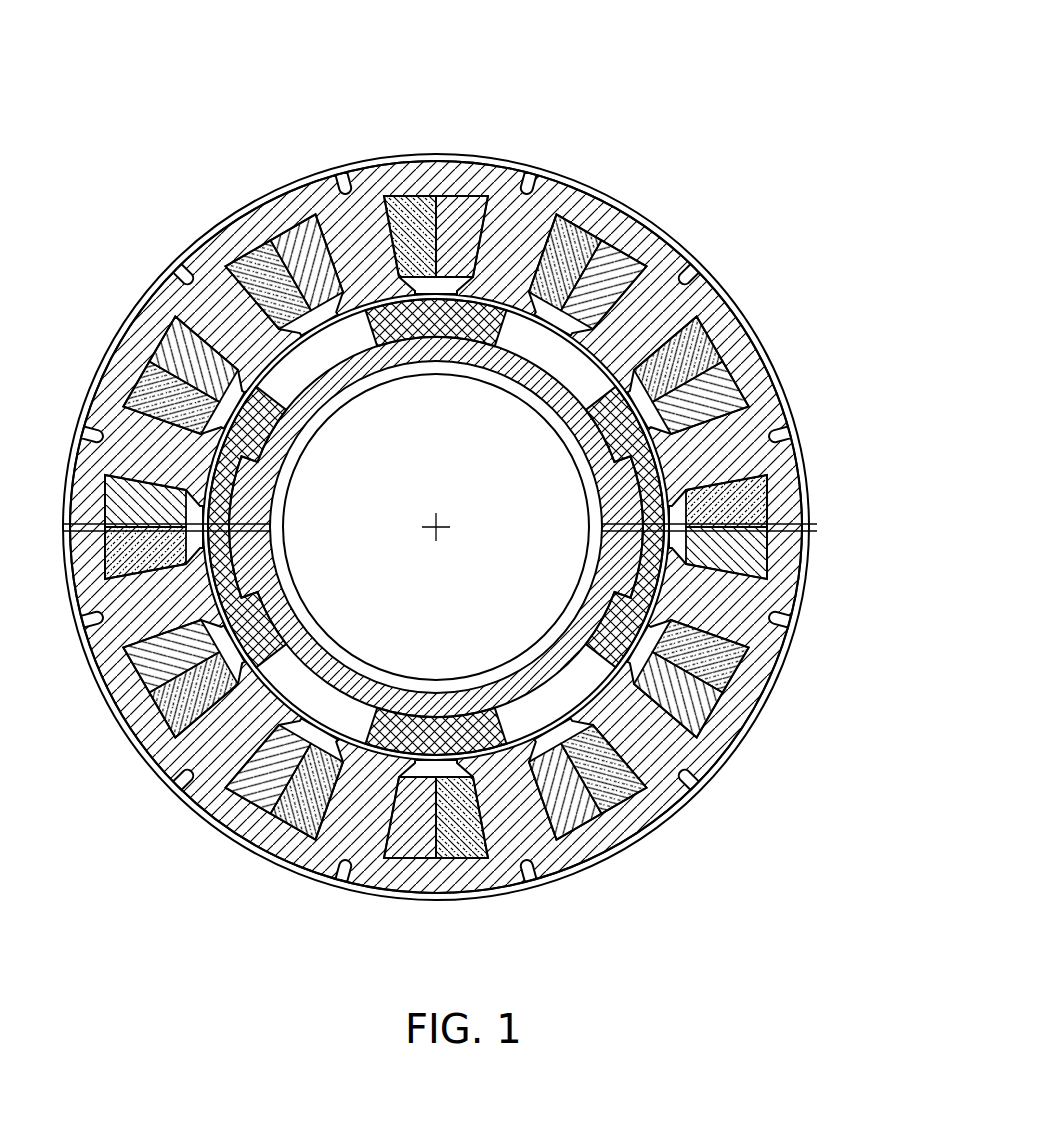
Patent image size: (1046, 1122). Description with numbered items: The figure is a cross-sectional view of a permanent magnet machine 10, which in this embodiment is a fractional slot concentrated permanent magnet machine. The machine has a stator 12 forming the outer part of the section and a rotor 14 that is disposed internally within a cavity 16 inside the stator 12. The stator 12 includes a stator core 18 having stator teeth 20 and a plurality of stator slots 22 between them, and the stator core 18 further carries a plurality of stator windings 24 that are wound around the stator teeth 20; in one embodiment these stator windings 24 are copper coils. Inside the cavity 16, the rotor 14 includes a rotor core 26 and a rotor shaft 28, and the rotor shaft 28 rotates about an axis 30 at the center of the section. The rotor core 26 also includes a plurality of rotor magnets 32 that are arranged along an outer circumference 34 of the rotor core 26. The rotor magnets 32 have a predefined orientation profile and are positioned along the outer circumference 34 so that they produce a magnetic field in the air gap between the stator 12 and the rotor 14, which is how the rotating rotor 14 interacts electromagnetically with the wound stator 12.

The permanent magnet machine 10 is at (455, 465).
The stator 12 is at (436, 504).
The rotor 14 is at (453, 527).
The cavity 16 is at (457, 530).
The stator core 18 is at (256, 218).
The stator teeth 20 is at (627, 325).
The stator slots 22 is at (620, 218).
The stator windings 24 is at (420, 208).
The rotor core 26 is at (370, 693).
The rotor shaft 28 is at (548, 630).
The axis 30 is at (444, 520).
The rotor magnets 32 is at (663, 457).
The outer circumference 34 is at (287, 657).